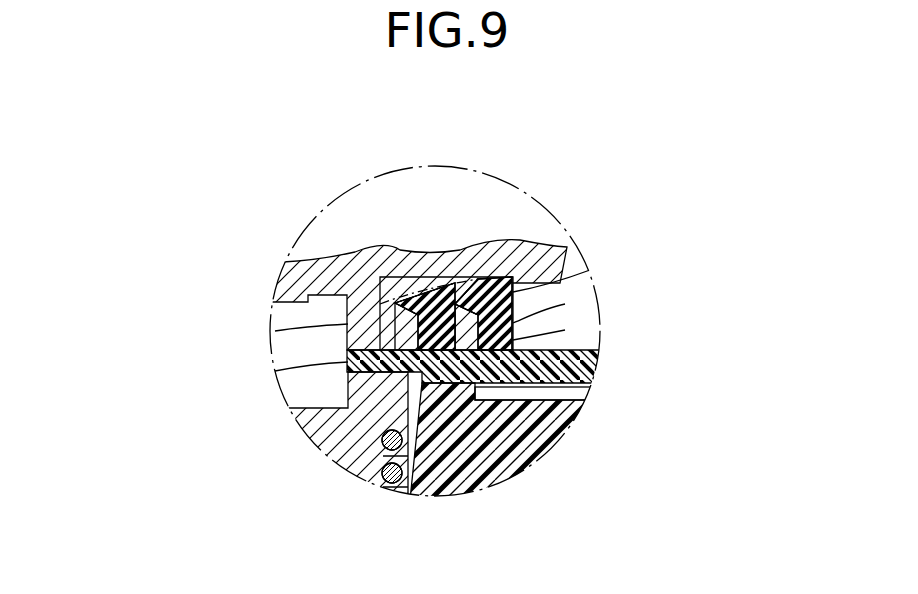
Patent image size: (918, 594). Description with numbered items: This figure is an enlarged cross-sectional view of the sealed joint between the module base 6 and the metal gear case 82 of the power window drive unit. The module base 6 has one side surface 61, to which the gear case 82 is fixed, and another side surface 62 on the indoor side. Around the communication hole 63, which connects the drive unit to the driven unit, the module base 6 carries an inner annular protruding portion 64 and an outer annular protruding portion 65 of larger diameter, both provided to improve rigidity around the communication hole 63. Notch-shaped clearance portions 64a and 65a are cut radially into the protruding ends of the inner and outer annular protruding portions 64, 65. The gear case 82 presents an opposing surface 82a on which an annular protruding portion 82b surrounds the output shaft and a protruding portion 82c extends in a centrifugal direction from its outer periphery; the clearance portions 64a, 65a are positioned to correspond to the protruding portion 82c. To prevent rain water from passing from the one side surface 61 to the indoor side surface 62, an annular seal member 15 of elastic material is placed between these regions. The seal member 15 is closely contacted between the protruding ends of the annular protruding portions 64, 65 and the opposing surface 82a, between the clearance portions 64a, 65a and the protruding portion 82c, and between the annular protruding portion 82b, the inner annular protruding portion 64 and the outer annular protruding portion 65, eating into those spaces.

The module base 6 is at (610, 367).
The annular seal member 15 is at (565, 305).
The one side surface 61 is at (570, 350).
The another side surface 62 is at (565, 394).
The communication hole 63 is at (275, 371).
The inner annular protruding portion 64 is at (438, 292).
The clearance portion 64a is at (394, 305).
The outer annular protruding portion 65 is at (460, 300).
The clearance portion 65a is at (462, 298).
The gear case 82 is at (560, 260).
The opposing surface 82a is at (565, 303).
The annular protruding portion 82b is at (275, 331).
The protruding portion 82c is at (378, 306).